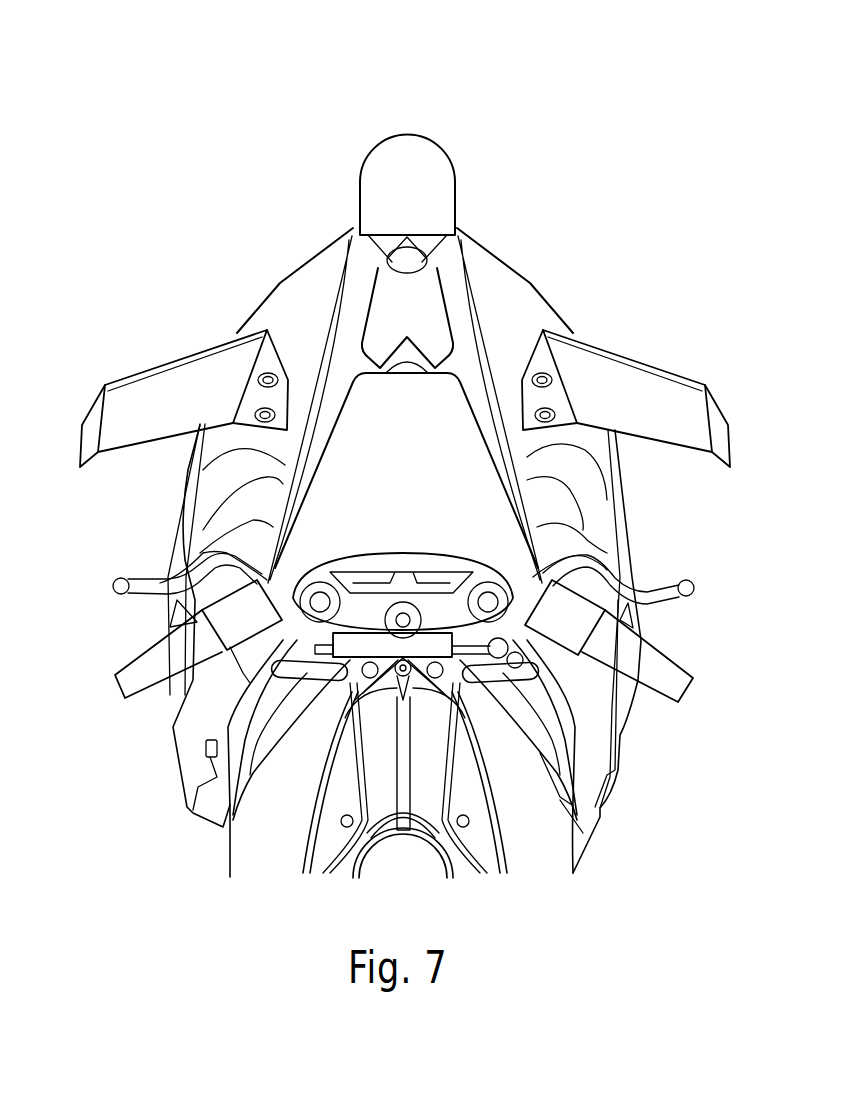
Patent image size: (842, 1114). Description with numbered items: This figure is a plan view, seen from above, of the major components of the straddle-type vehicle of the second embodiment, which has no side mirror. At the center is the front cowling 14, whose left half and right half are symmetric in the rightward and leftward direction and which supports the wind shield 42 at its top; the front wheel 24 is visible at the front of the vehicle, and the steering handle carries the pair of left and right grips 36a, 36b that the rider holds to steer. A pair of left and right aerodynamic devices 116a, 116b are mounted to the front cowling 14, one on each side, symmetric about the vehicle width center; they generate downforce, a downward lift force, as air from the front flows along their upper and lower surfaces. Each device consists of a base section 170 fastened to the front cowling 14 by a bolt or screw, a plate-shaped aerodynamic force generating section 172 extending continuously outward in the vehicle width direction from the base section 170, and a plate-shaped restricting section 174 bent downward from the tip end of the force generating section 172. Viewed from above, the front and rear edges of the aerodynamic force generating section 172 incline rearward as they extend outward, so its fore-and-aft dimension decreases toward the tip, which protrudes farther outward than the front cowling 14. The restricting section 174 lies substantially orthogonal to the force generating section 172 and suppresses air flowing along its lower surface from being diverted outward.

The front wheel 24 is at (424, 158).
The front cowling 14 is at (515, 265).
The left aerodynamic device 116a is at (164, 335).
The right aerodynamic device 116b is at (626, 333).
The base section 170 is at (245, 336).
The aerodynamic force generating section 172 is at (157, 383).
The restricting section 174 is at (90, 413).
The wind shield 42 is at (340, 507).
The left grip 36a is at (128, 660).
The right grip 36b is at (663, 653).